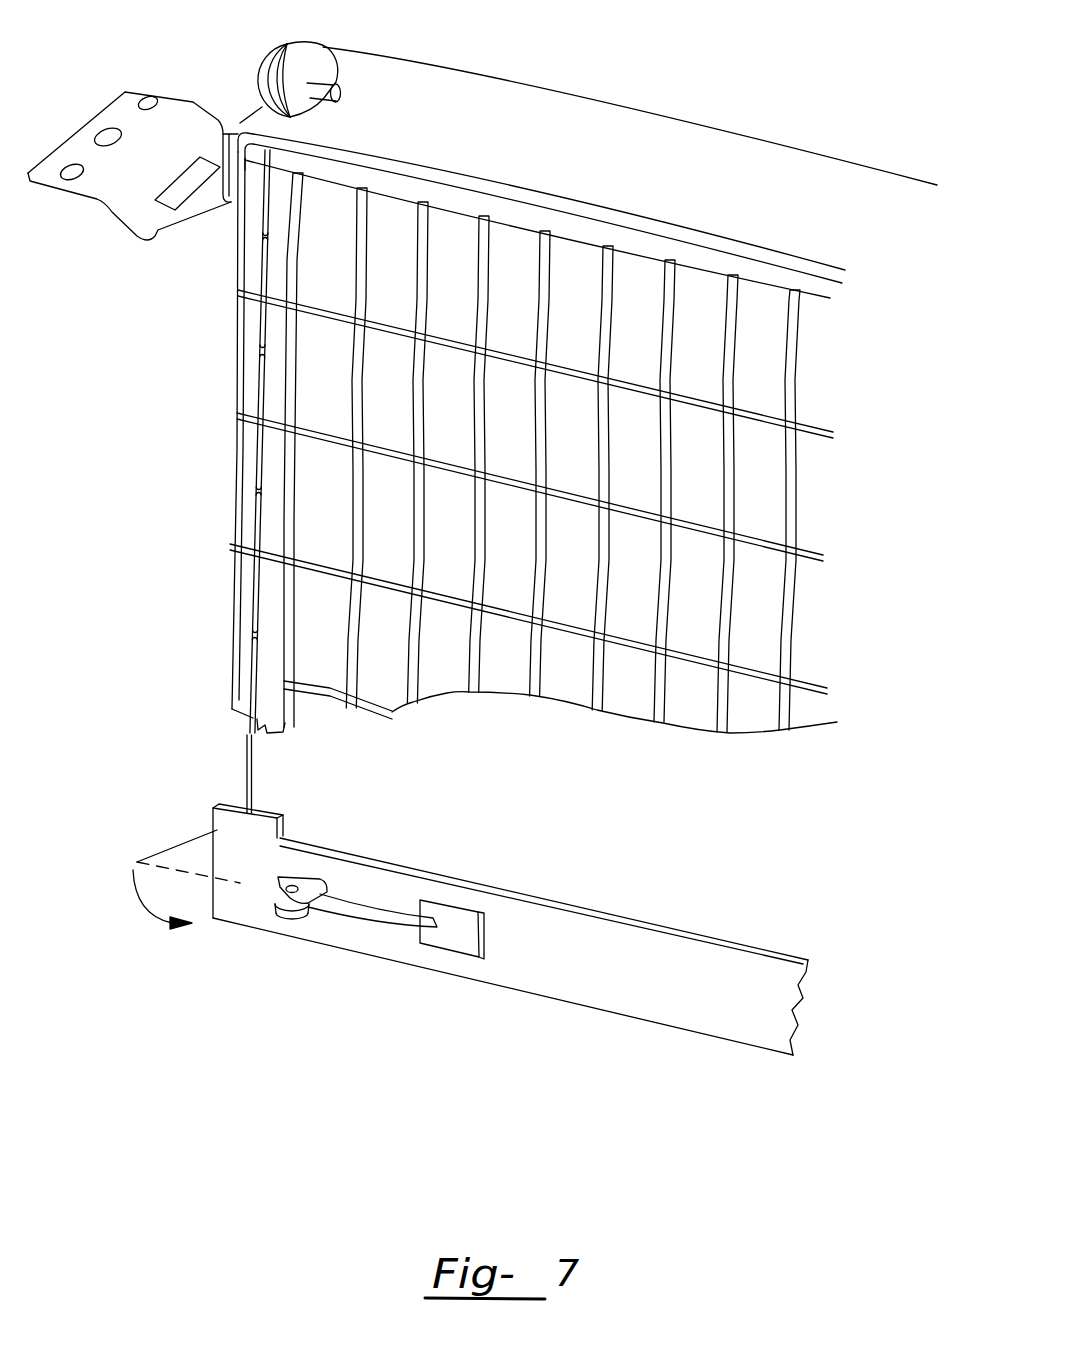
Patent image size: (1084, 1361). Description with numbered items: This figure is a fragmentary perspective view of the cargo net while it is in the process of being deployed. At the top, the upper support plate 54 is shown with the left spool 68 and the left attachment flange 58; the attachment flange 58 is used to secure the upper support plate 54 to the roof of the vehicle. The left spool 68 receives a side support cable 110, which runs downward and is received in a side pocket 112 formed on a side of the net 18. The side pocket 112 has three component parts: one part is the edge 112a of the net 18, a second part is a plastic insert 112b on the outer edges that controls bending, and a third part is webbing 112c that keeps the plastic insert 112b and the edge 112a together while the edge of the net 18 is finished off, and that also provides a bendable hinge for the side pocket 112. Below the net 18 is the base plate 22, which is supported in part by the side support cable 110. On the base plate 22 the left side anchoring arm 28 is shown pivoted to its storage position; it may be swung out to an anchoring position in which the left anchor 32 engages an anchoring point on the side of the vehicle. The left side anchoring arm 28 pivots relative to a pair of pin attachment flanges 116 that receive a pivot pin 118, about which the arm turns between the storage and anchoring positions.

The net 18 is at (537, 668).
The base plate 22 is at (630, 1003).
The left side anchoring arm 28 is at (350, 913).
The left anchor 32 is at (467, 937).
The upper support plate 54 is at (575, 125).
The left attachment flange 58 is at (116, 110).
The left spool 68 is at (320, 62).
The side support cable 110 is at (257, 467).
The side pocket 112 is at (238, 587).
The edge of the net 112a is at (287, 327).
The plastic insert 112b is at (245, 367).
The webbing 112c is at (237, 413).
The pin attachment flanges 116 is at (280, 879).
The pivot pin 118 is at (293, 886).